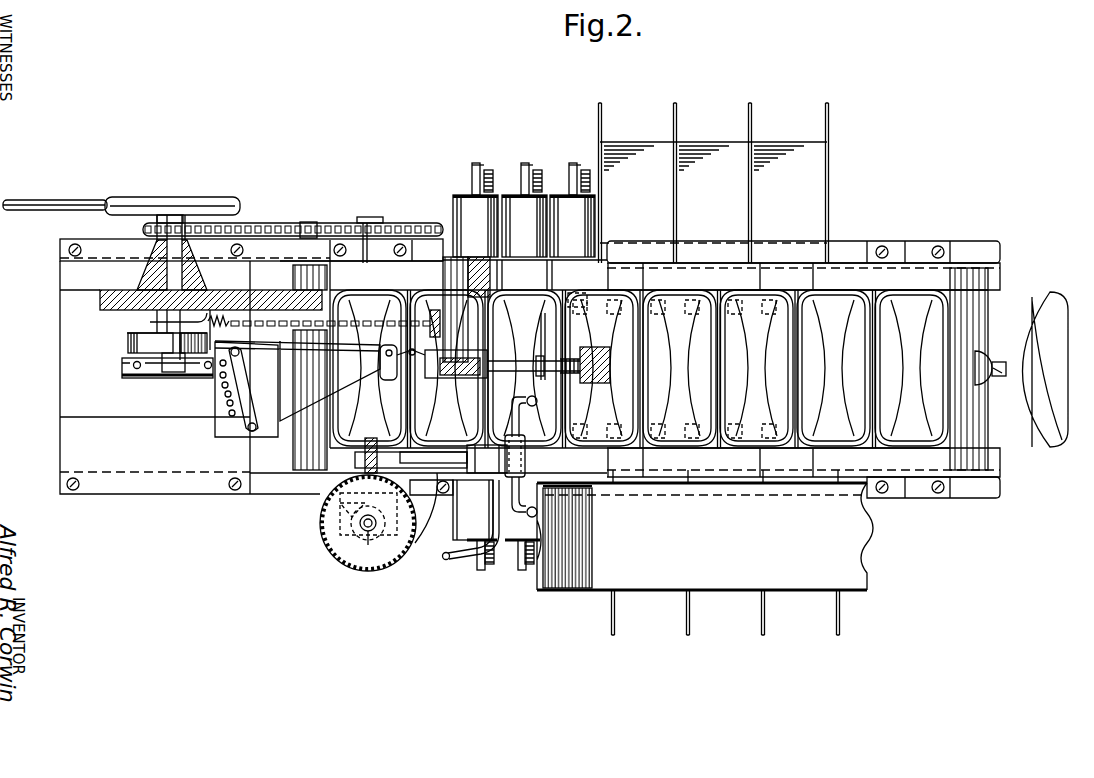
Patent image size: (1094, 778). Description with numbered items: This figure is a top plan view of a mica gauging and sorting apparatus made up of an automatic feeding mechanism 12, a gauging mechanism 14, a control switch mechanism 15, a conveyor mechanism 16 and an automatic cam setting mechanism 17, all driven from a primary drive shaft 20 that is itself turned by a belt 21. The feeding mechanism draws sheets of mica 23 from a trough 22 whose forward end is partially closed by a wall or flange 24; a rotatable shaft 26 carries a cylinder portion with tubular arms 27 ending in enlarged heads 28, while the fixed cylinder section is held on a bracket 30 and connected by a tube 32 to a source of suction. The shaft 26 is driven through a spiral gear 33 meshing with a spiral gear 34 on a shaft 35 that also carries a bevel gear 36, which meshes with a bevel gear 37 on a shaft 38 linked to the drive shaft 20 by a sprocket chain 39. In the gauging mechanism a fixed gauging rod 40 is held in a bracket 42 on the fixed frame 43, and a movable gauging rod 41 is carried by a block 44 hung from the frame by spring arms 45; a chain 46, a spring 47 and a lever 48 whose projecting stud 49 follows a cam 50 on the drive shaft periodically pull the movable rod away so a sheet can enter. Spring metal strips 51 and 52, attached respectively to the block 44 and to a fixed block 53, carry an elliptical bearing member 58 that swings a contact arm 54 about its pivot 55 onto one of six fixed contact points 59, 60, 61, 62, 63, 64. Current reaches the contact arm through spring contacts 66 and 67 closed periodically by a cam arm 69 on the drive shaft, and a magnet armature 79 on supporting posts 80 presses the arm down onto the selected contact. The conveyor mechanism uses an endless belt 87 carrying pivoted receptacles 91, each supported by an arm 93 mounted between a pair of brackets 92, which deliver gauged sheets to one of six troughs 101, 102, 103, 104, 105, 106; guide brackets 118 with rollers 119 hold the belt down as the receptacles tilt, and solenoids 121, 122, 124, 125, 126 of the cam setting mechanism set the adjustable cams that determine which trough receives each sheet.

The automatic feeding mechanism 12 is at (515, 456).
The gauging mechanism 14 is at (524, 368).
The control switch mechanism 15 is at (235, 444).
The conveyor mechanism 16 is at (851, 277).
The automatic cam setting mechanism 17 is at (508, 156).
The primary drive shaft 20 is at (173, 197).
The belt 21 is at (53, 203).
The trough 22 is at (865, 548).
The sheets of mica 23 is at (542, 340).
The wall or flange 24 is at (537, 580).
The rotatable shaft 26 is at (427, 465).
The tubular arms 27 is at (521, 426).
The enlarged heads 28 is at (512, 560).
The bracket 30 is at (483, 455).
The tube 32 is at (452, 558).
The spiral gear 33 is at (371, 438).
The spiral gear 34 is at (363, 570).
The shaft 35 is at (370, 534).
The bevel gear 36 is at (366, 519).
The bevel gear 37 is at (345, 513).
The shaft 38 is at (365, 220).
The sprocket chain 39 is at (270, 222).
The fixed gauging rod 40 is at (545, 360).
The movable gauging rod 41 is at (530, 376).
The bracket 42 is at (602, 345).
The fixed frame 43 is at (225, 299).
The block 44 is at (460, 378).
The spring arms 45 is at (443, 300).
The chain 46 is at (288, 327).
The spring 47 is at (220, 316).
The lever 48 is at (151, 322).
The projecting stud 49 is at (128, 333).
The cam 50 is at (128, 345).
The spring metal strip 51 is at (430, 378).
The spring metal strip 52 is at (438, 336).
The fixed block 53 is at (448, 285).
The contact arm 54 is at (297, 381).
The pivot 55 is at (385, 360).
The elliptical bearing member 58 is at (388, 382).
The fixed contact point 59 is at (221, 368).
The fixed contact point 60 is at (222, 379).
The fixed contact point 61 is at (224, 389).
The fixed contact point 62 is at (228, 398).
The fixed contact point 63 is at (230, 407).
The fixed contact point 64 is at (232, 417).
The spring contact 66 is at (140, 379).
The spring contact 67 is at (190, 385).
The cam arm 69 is at (183, 380).
The armature 79 is at (246, 383).
The supporting posts 80 is at (236, 348).
The endless belt 87 is at (988, 292).
The receptacles 91 is at (785, 372).
The brackets 92 is at (985, 355).
The arm 93 is at (1006, 372).
The trough 101 is at (668, 598).
The trough 102 is at (633, 141).
The trough 103 is at (739, 598).
The trough 104 is at (708, 141).
The trough 105 is at (811, 598).
The trough 106 is at (785, 141).
The guide brackets 118 is at (790, 275).
The rollers 119 is at (742, 312).
The solenoid 121 is at (473, 510).
The solenoid 122 is at (475, 210).
The solenoid 124 is at (572, 210).
The solenoid 125 is at (530, 515).
The solenoid 126 is at (524, 210).